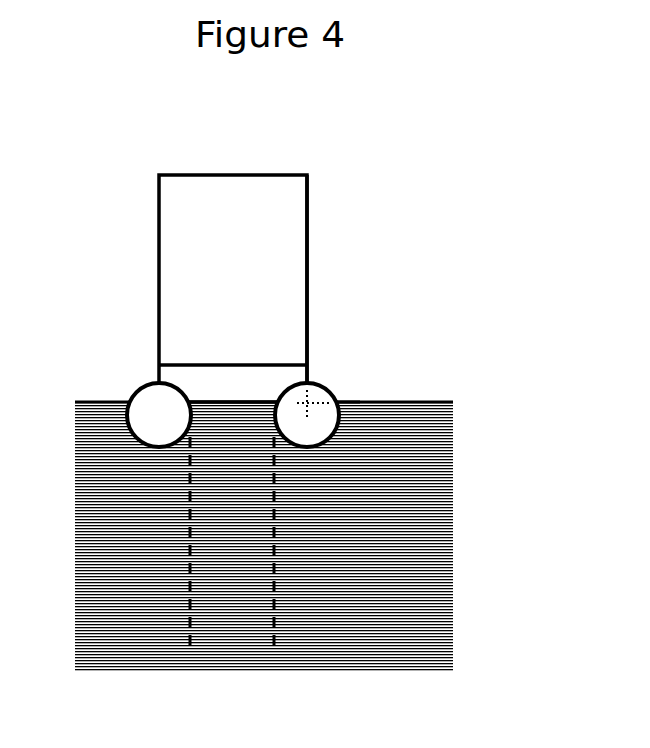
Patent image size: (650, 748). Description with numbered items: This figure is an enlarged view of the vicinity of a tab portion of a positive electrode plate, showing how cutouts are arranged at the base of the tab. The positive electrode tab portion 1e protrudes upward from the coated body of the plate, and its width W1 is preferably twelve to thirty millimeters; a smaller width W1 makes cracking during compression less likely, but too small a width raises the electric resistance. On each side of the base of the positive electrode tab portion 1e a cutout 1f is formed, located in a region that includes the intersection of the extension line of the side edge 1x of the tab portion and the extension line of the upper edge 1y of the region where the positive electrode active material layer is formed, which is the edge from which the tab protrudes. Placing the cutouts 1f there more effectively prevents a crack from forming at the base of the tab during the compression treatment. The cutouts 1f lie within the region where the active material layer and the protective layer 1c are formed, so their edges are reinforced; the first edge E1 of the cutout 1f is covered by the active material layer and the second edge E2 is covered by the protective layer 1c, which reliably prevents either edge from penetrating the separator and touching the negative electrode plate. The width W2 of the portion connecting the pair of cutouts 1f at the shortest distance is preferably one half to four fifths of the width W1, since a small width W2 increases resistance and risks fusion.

The positive electrode tab portion 1e is at (178, 275).
The cutout 1f is at (165, 415).
The protective layer 1c is at (226, 380).
The side edge 1x is at (308, 242).
The upper edge 1y is at (425, 402).
The first edge E1 is at (342, 406).
The second edge E2 is at (309, 383).
The width of the positive electrode tab portion W1 is at (306, 153).
The width of the portion connecting the pair of cutouts W2 is at (272, 520).